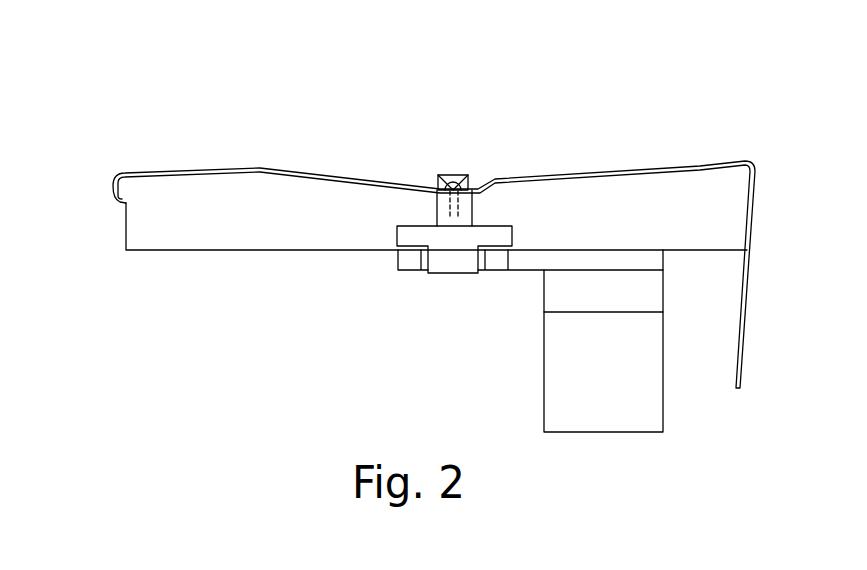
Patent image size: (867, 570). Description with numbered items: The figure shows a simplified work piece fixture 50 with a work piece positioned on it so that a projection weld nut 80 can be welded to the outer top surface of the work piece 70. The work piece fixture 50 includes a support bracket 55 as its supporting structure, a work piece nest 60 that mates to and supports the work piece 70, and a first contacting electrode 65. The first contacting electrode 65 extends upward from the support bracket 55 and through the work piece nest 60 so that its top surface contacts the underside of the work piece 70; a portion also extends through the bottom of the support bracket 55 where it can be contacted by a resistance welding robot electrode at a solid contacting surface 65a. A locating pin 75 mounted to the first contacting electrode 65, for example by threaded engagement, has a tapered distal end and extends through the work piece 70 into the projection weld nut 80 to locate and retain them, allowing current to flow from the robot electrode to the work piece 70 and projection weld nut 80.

The work piece fixture 50 is at (92, 76).
The support bracket 55 is at (655, 332).
The work piece nest 60 is at (283, 235).
The first contacting electrode 65 is at (443, 274).
The solid contacting surface 65a is at (438, 187).
The work piece 70 is at (300, 170).
The locating pin 75 is at (468, 177).
The projection weld nut 80 is at (440, 183).